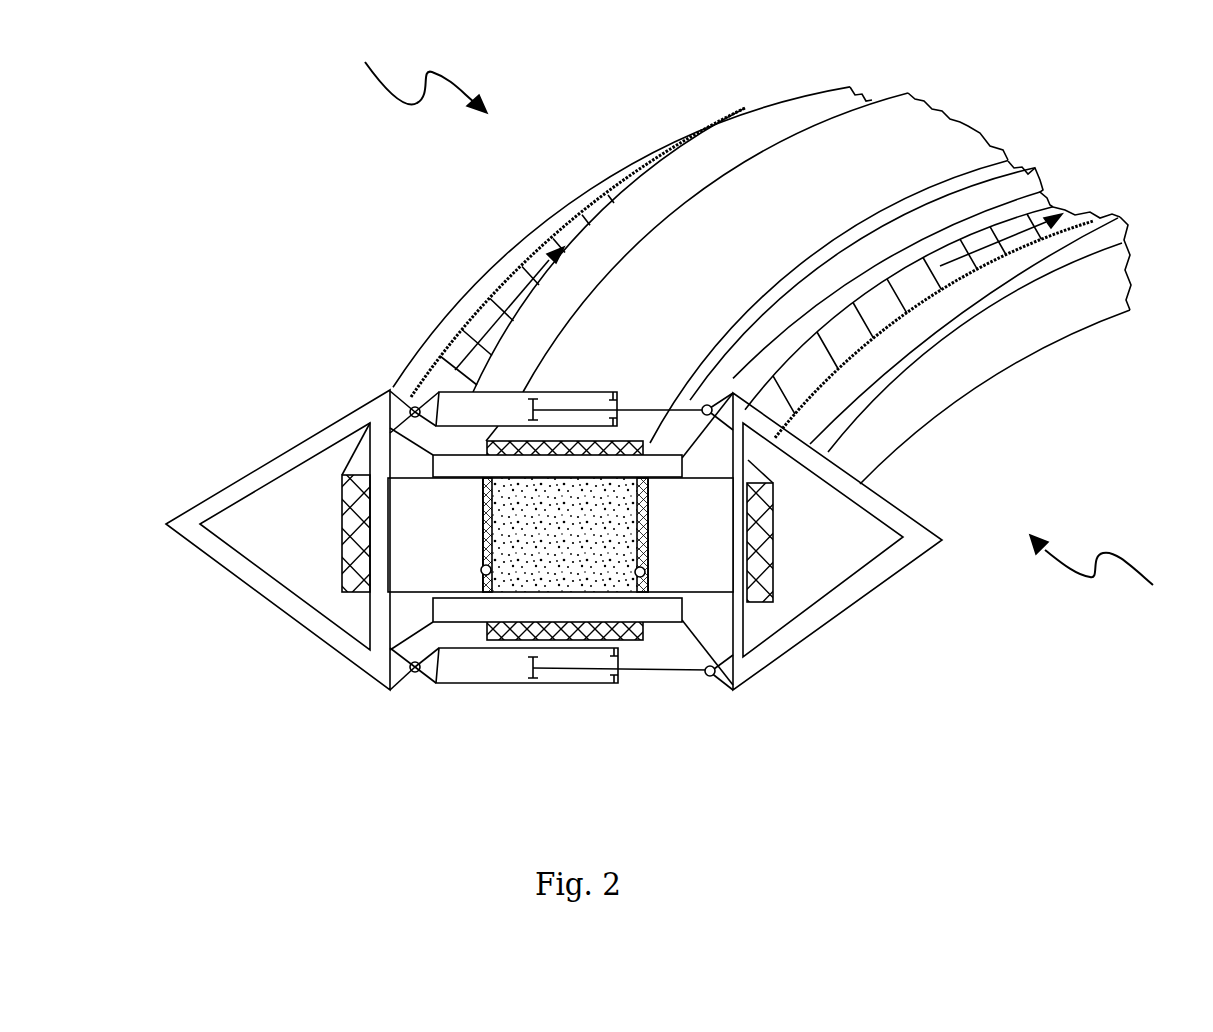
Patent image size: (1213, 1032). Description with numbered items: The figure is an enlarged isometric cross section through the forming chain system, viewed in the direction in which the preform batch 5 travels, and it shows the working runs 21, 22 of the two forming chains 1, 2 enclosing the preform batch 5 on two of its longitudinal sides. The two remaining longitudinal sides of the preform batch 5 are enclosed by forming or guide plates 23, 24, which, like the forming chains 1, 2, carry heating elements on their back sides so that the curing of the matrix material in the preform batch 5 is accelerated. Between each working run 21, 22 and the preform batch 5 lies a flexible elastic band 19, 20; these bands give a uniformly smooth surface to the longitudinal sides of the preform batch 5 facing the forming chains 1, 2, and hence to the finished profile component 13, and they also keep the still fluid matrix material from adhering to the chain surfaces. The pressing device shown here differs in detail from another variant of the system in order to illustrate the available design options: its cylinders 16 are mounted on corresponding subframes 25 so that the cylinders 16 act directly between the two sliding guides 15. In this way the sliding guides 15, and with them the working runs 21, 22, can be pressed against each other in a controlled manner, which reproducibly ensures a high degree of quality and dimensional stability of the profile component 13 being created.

The forming chain 1 is at (412, 77).
The forming chain 2 is at (1106, 577).
The preform batch 5 is at (573, 553).
The profile component 13 is at (661, 329).
The sliding guide 15 is at (485, 292).
The cylinder 16 is at (494, 424).
The flexible elastic band 19 is at (491, 571).
The flexible elastic band 20 is at (645, 573).
The working run 21 is at (447, 552).
The working run 22 is at (703, 553).
The guide plate 23 is at (453, 462).
The guide plate 24 is at (460, 611).
The subframe 25 is at (262, 582).